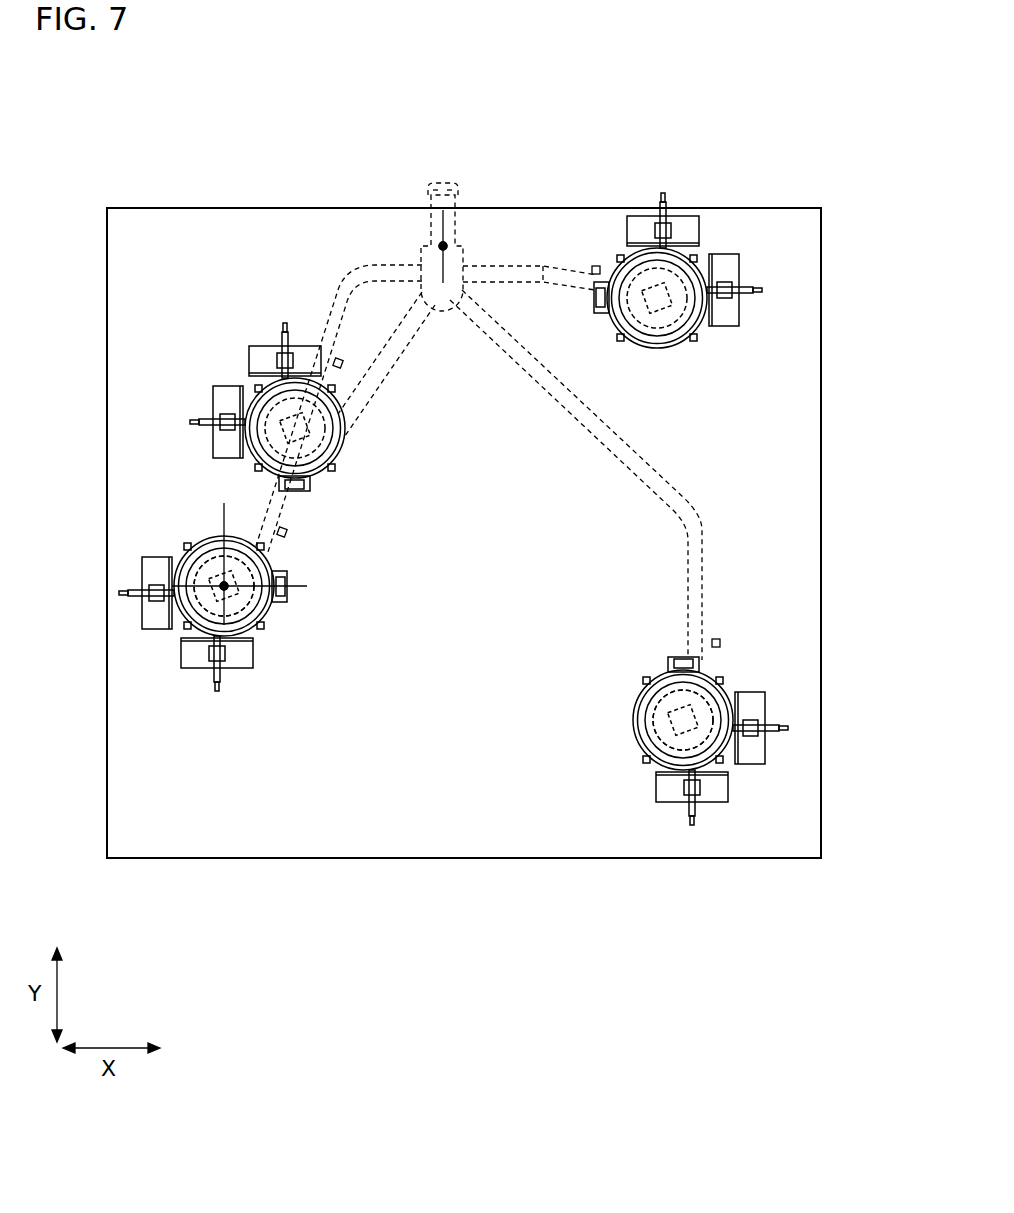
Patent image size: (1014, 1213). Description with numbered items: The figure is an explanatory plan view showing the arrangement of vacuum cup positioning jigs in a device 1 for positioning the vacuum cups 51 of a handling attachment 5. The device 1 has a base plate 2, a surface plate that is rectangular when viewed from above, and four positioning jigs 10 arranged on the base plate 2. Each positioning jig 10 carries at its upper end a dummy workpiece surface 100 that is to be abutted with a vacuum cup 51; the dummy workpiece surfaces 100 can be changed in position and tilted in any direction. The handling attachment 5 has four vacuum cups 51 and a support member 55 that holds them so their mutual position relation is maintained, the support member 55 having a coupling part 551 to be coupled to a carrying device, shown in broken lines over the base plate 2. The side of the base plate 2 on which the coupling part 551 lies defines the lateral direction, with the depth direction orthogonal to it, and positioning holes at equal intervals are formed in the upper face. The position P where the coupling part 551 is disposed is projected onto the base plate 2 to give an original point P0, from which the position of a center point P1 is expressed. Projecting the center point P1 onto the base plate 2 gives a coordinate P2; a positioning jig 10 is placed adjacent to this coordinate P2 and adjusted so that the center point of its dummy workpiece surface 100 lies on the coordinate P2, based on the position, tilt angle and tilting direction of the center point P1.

The device for positioning the vacuum cups 1 is at (312, 195).
The base plate 2 is at (402, 813).
The handling attachment 5 is at (488, 352).
The support member 55 is at (526, 262).
The coupling part 551 is at (422, 246).
The vacuum cup 51 is at (698, 260).
The positioning jig 10 is at (198, 675).
The dummy workpiece surface 100 is at (243, 617).
The position where coupling part is disposed P is at (479, 175).
The original point P0 is at (443, 246).
The center point P1 is at (121, 659).
The coordinate P2 is at (224, 586).